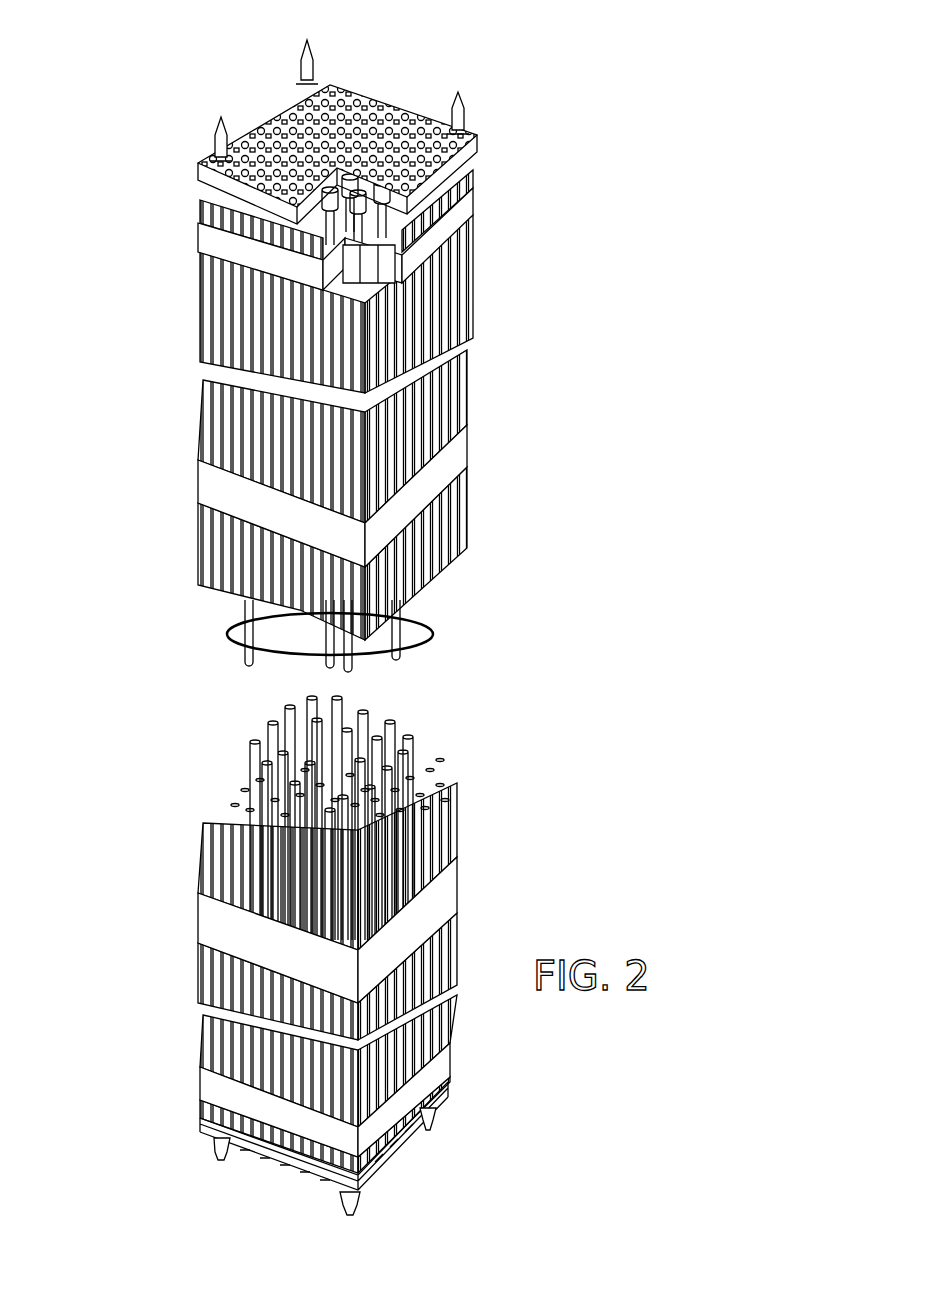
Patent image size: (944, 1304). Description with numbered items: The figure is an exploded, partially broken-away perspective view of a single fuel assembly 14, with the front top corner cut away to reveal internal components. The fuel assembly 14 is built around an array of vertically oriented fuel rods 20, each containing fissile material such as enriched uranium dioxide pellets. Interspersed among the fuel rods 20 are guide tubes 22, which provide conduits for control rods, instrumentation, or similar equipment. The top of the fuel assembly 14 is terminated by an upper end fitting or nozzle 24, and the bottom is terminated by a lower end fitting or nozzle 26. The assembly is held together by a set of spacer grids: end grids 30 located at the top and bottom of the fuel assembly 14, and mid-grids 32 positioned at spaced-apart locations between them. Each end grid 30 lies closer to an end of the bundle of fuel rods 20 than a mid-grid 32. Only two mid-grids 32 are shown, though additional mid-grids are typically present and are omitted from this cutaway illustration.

The fuel assembly 14 is at (359, 613).
The fuel rods 20 is at (208, 543).
The guide tubes 22 is at (437, 627).
The upper end fitting or nozzle 24 is at (383, 98).
The lower end fitting or nozzle 26 is at (403, 1147).
The end grids 30 is at (200, 223).
The mid-grids 32 is at (200, 490).